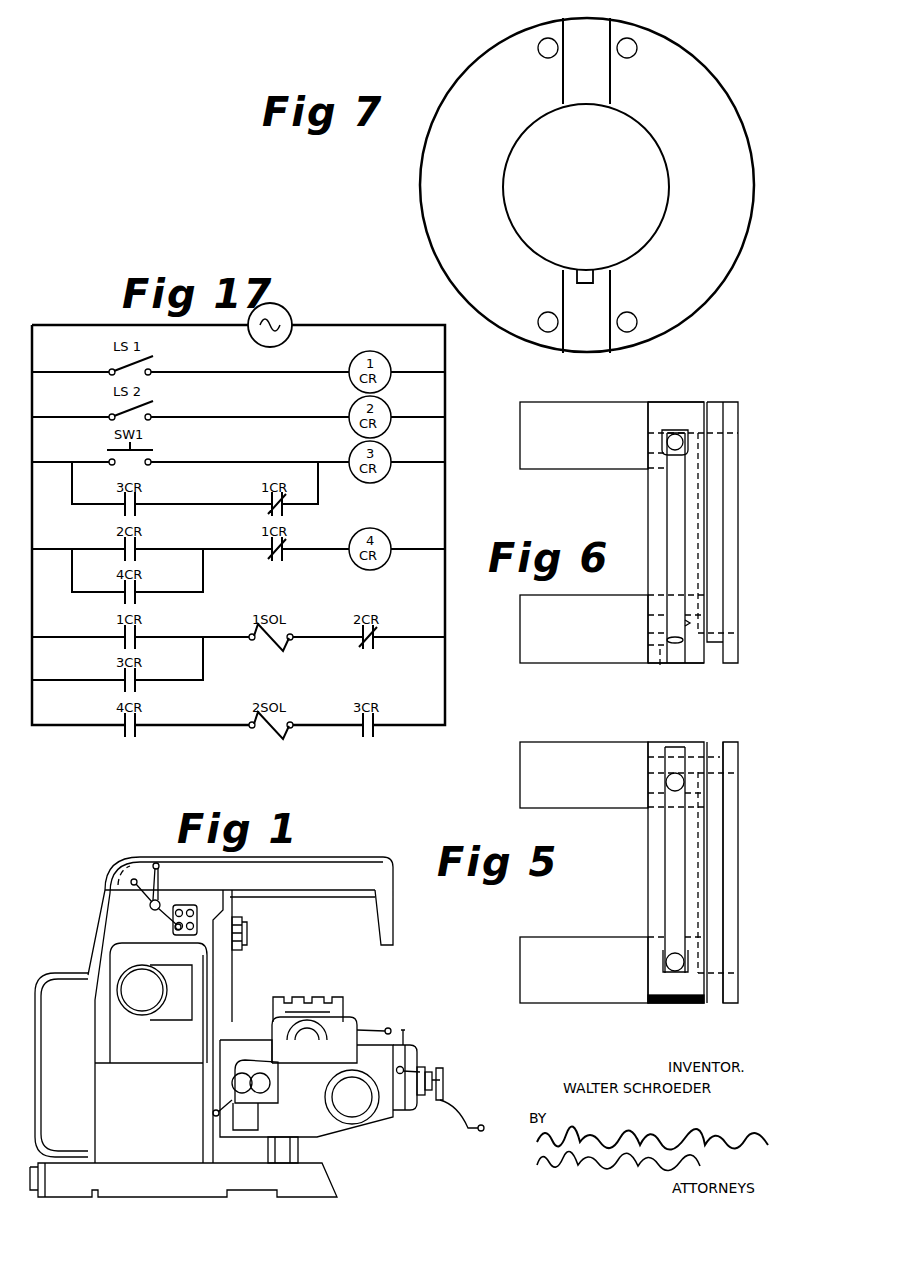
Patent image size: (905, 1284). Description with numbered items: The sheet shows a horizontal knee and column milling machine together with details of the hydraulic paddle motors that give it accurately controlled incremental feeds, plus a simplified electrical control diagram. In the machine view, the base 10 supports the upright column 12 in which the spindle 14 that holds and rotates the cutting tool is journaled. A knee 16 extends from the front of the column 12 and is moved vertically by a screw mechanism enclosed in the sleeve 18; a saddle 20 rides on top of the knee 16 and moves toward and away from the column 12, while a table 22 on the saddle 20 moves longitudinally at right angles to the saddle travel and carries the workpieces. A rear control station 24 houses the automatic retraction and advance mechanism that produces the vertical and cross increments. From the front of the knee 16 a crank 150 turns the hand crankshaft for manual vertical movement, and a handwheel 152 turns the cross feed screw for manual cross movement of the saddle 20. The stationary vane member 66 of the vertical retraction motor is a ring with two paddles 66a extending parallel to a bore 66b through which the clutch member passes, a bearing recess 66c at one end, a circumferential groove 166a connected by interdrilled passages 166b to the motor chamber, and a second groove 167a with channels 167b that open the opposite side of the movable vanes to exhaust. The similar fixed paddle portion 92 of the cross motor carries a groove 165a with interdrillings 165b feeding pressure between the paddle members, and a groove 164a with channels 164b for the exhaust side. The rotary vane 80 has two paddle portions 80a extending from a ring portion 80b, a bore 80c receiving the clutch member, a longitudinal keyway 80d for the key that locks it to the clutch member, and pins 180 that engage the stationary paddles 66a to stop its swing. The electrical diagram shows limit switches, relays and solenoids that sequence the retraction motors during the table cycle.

In FIG. 1, the base 10 is at (74, 1190).
In FIG. 1, the column 12 is at (156, 1092).
In FIG. 1, the spindle 14 is at (244, 931).
In FIG. 1, the knee 16 is at (365, 1133).
In FIG. 1, the sleeve 18 is at (300, 1151).
In FIG. 1, the saddle 20 is at (347, 1021).
In FIG. 1, the table 22 is at (315, 997).
In FIG. 1, the rear control station 24 is at (278, 1098).
In FIG. 1, the crank 150 is at (466, 1102).
In FIG. 1, the handwheel 152 is at (437, 1068).
In FIG. 7, the movable paddle member 80 is at (715, 75).
In FIG. 7, the paddle portions 80a is at (598, 65).
In FIG. 7, the ring portion 80b is at (722, 176).
In FIG. 7, the bore 80c is at (520, 160).
In FIG. 7, the longitudinal keyway 80d is at (583, 275).
In FIG. 7, the pins 180 is at (636, 312).
In FIG. 6, the fixed paddle portion 92 is at (736, 402).
In FIG. 6, the groove 164a is at (723, 510).
In FIG. 6, the channels 164b is at (657, 403).
In FIG. 6, the groove 165a is at (665, 512).
In FIG. 6, the interdrillings 165b is at (680, 430).
In FIG. 5, the fixed paddle portion 66 is at (738, 860).
In FIG. 5, the paddles 66a is at (596, 785).
In FIG. 5, the bore 66b is at (658, 935).
In FIG. 5, the bearing recess 66c is at (728, 773).
In FIG. 5, the groove 166a is at (665, 858).
In FIG. 5, the interdrilled passages 166b is at (670, 773).
In FIG. 5, the groove 167a is at (723, 915).
In FIG. 5, the channels 167b is at (685, 745).